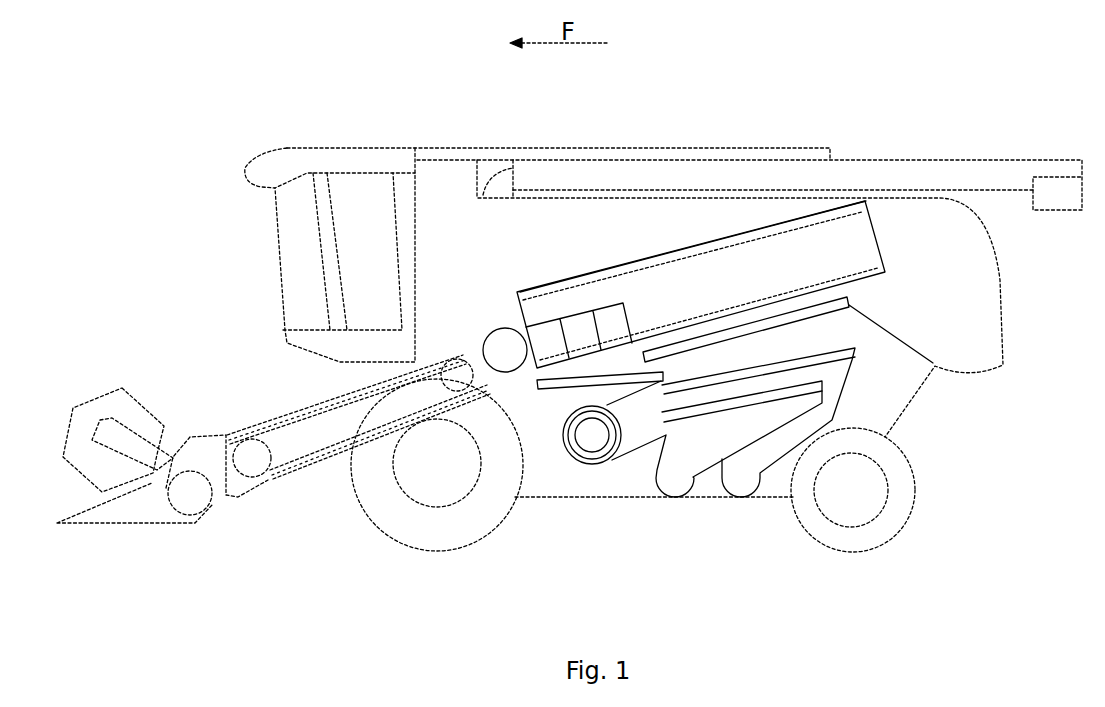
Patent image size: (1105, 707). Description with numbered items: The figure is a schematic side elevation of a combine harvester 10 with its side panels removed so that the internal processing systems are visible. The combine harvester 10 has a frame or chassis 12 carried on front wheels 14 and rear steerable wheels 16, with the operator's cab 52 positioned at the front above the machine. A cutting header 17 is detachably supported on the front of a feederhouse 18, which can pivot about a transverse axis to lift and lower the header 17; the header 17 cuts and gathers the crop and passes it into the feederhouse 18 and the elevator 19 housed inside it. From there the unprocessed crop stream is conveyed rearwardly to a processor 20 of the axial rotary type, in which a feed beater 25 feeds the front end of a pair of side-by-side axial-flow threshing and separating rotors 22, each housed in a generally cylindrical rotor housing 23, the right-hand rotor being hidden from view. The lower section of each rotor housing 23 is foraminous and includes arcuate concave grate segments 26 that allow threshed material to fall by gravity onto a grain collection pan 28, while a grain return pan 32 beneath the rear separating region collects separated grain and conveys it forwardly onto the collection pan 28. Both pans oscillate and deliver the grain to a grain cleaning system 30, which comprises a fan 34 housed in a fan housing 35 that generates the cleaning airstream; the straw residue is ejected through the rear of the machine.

The combine harvester 10 is at (196, 136).
The frame or chassis 12 is at (580, 498).
The front wheels 14 is at (373, 523).
The rear steerable wheels 16 is at (915, 505).
The cutting header 17 is at (203, 436).
The feederhouse 18 is at (270, 424).
The elevator 19 is at (320, 440).
The processor 20 is at (575, 313).
The axial-flow threshing and separating rotors 22 is at (637, 273).
The rotor housing 23 is at (682, 247).
The feed beater 25 is at (497, 328).
The concave grate segments 26 is at (603, 303).
The grain collection pan 28 is at (548, 389).
The grain cleaning system 30 is at (707, 498).
The grain return pan 32 is at (806, 317).
The fan 34 is at (577, 453).
The fan housing 35 is at (603, 467).
The cab 52 is at (362, 148).